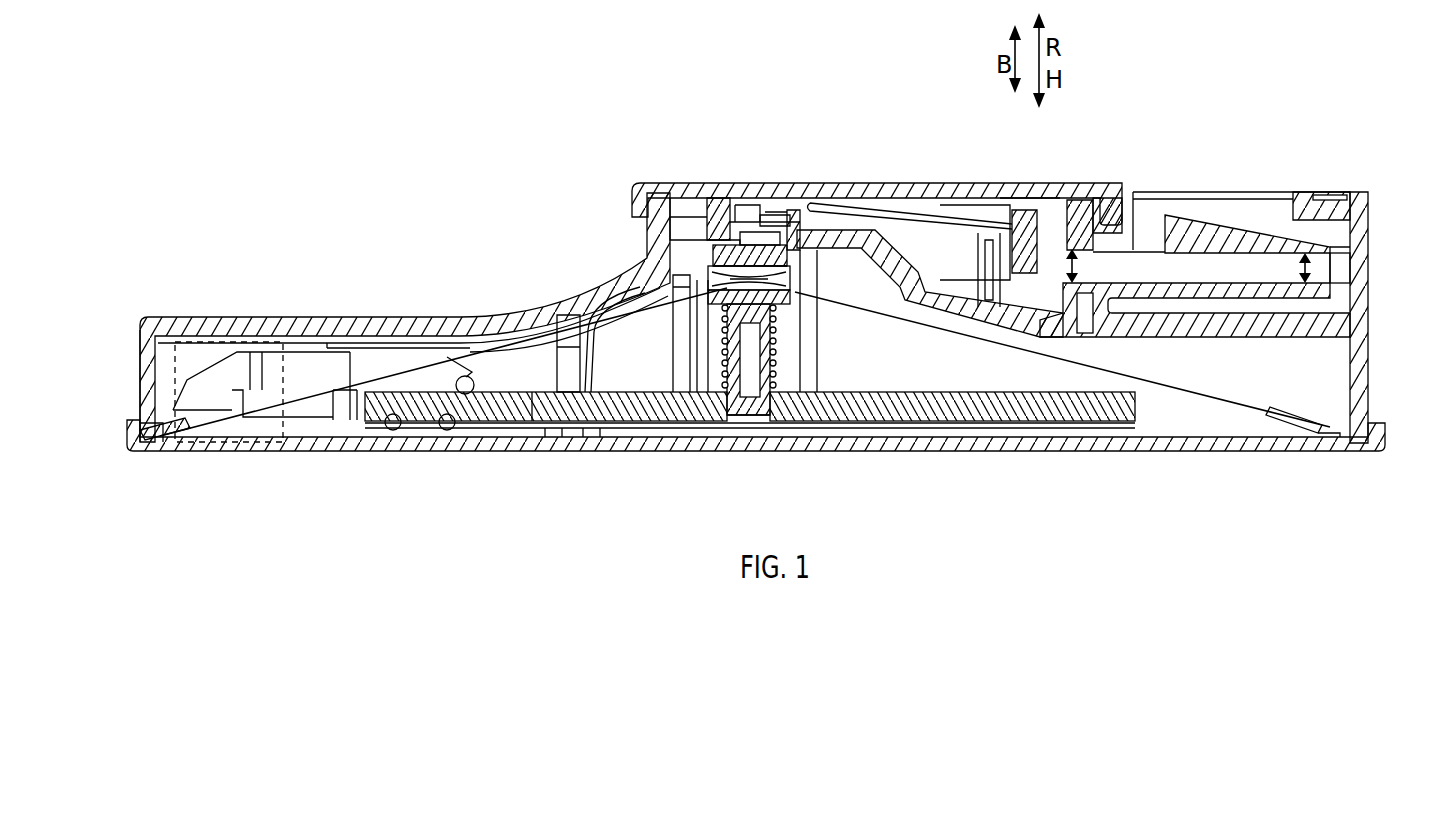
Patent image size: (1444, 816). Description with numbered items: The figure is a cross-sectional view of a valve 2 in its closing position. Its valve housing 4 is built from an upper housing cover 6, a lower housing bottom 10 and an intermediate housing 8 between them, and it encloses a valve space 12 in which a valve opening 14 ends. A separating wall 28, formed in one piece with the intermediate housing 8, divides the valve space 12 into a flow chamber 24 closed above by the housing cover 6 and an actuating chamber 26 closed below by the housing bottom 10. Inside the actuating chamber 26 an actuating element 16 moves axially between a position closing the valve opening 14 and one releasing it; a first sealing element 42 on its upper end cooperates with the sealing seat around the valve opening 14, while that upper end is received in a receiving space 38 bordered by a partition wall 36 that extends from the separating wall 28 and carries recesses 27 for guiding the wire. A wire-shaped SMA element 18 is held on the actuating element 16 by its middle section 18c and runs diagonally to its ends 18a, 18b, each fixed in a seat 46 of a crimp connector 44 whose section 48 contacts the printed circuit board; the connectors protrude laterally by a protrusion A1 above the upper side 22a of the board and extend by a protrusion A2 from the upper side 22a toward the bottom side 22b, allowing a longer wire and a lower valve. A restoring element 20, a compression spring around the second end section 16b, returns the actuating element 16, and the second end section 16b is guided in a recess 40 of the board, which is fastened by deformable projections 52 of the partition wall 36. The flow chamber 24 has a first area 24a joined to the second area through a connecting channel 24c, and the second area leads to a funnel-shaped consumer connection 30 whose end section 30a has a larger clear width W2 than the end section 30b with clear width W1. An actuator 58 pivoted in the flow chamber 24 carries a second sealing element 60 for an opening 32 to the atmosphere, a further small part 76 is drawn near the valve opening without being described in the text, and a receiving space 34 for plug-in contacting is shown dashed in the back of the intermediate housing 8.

The valve 2 is at (430, 178).
The valve housing 4 is at (518, 290).
The housing cover 6 is at (817, 190).
The intermediate housing 8 is at (384, 330).
The housing bottom 10 is at (863, 447).
The valve space 12 is at (968, 255).
The valve opening 14 is at (753, 240).
The actuating element 16 is at (790, 300).
The second end section 16b is at (770, 414).
The SMA element 18 is at (1173, 392).
The end 18a is at (1320, 430).
The end 18b is at (197, 432).
The middle section 18c is at (720, 327).
The restoring element 20 is at (687, 393).
The upper side 22a is at (470, 396).
The bottom side 22b is at (408, 428).
The flow chamber 24 is at (958, 245).
The first area 24a is at (685, 232).
The connecting channel 24c is at (727, 242).
The actuating chamber 26 is at (535, 378).
The recesses 27 is at (807, 366).
The separating wall 28 is at (1000, 332).
The consumer connection 30 is at (1254, 266).
The end section 30a is at (1062, 200).
The end section 30b is at (1323, 256).
The opening 32 is at (1022, 186).
The receiving space 34 is at (187, 352).
The partition wall 36 is at (640, 285).
The receiving space 38 is at (672, 280).
The recess 40 is at (737, 416).
The first sealing element 42 is at (778, 262).
The crimp connector 44 is at (303, 368).
The seat 46 is at (220, 410).
The section 48 is at (441, 373).
The deformable projections 52 is at (452, 430).
The actuator 58 is at (853, 212).
The second sealing element 60 is at (1032, 220).
The clip 76 is at (764, 225).
The protrusion A1 is at (350, 362).
The protrusion A2 is at (138, 440).
The clear width W1 is at (1320, 268).
The clear width W2 is at (1132, 240).